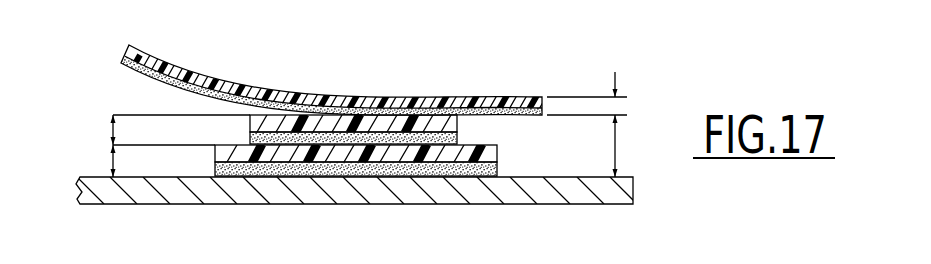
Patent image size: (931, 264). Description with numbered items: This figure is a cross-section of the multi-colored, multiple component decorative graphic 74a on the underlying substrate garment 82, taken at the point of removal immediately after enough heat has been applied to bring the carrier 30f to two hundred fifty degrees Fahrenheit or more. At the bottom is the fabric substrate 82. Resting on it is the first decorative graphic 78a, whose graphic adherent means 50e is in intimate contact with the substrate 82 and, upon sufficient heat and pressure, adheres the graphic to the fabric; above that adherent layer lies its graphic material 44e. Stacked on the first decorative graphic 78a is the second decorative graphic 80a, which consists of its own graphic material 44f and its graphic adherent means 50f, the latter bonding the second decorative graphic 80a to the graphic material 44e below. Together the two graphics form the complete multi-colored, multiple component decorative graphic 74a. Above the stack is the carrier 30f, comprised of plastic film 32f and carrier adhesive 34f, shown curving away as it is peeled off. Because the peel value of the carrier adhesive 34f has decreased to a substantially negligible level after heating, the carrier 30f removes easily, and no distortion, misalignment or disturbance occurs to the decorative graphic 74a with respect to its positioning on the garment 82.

The carrier 30f is at (379, 81).
The plastic film 32f is at (541, 75).
The carrier adhesive 34f is at (126, 73).
The graphic material 44e is at (214, 152).
The graphic material 44f is at (250, 120).
The graphic adherent means 50e is at (495, 172).
The graphic adherent means 50f is at (457, 138).
The multi-colored, multiple component decorative graphic 74a is at (617, 149).
The first decorative graphic 78a is at (113, 163).
The second decorative graphic 80a is at (112, 131).
The substrate garment 82 is at (148, 202).